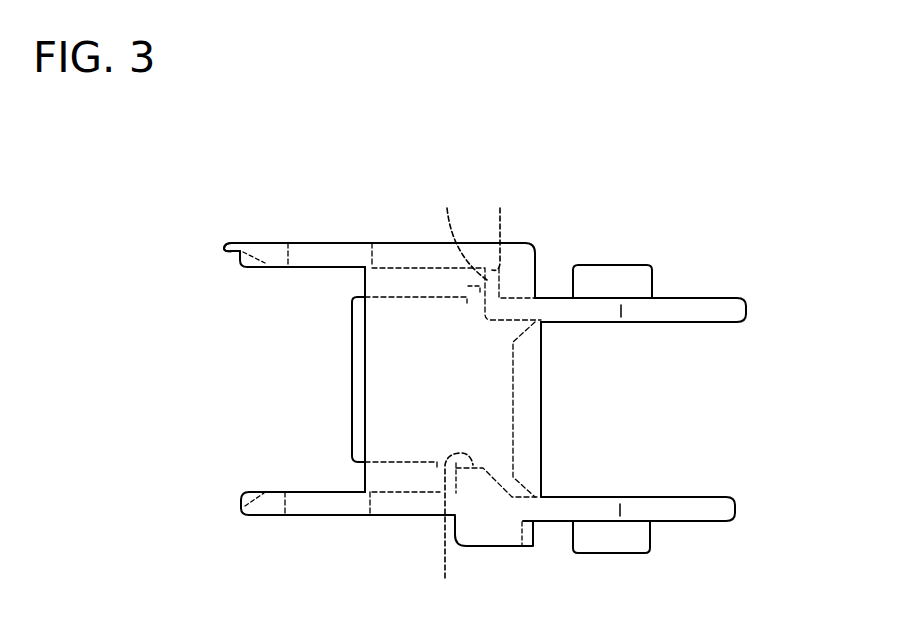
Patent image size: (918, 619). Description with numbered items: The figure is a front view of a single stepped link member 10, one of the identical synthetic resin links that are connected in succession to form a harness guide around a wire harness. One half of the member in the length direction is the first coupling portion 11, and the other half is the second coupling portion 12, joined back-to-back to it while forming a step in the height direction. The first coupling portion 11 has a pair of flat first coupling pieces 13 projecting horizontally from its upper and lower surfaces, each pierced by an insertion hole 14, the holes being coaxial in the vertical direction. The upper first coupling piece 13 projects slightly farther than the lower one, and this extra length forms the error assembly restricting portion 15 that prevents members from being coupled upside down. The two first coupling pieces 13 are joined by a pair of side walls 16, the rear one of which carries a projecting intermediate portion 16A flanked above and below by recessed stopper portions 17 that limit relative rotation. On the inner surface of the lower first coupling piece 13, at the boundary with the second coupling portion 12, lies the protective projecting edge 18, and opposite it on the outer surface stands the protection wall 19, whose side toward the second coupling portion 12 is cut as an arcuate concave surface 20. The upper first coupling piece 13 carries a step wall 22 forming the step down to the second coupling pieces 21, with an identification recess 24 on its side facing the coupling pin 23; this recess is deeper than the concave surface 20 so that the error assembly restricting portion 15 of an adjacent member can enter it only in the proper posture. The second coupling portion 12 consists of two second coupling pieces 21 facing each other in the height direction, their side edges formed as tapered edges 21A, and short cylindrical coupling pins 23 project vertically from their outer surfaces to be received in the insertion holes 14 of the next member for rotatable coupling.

The stepped link member 10 is at (545, 202).
The first coupling portion 11 is at (377, 517).
The second coupling portion 12 is at (708, 517).
The first coupling piece 13 is at (267, 250).
The insertion hole 14 is at (320, 250).
The error assembly restricting portion 15 is at (237, 244).
The side wall 16 is at (412, 337).
The intermediate portion 16A is at (358, 398).
The stopper portion 17 is at (357, 280).
The protective projecting edge 18 is at (453, 529).
The protection wall 19 is at (490, 530).
The concave surface 20 is at (527, 540).
The second coupling piece 21 is at (745, 313).
The tapered edge 21A is at (692, 305).
The step wall 22 is at (460, 230).
The coupling pin 23 is at (613, 277).
The identification recess 24 is at (511, 239).